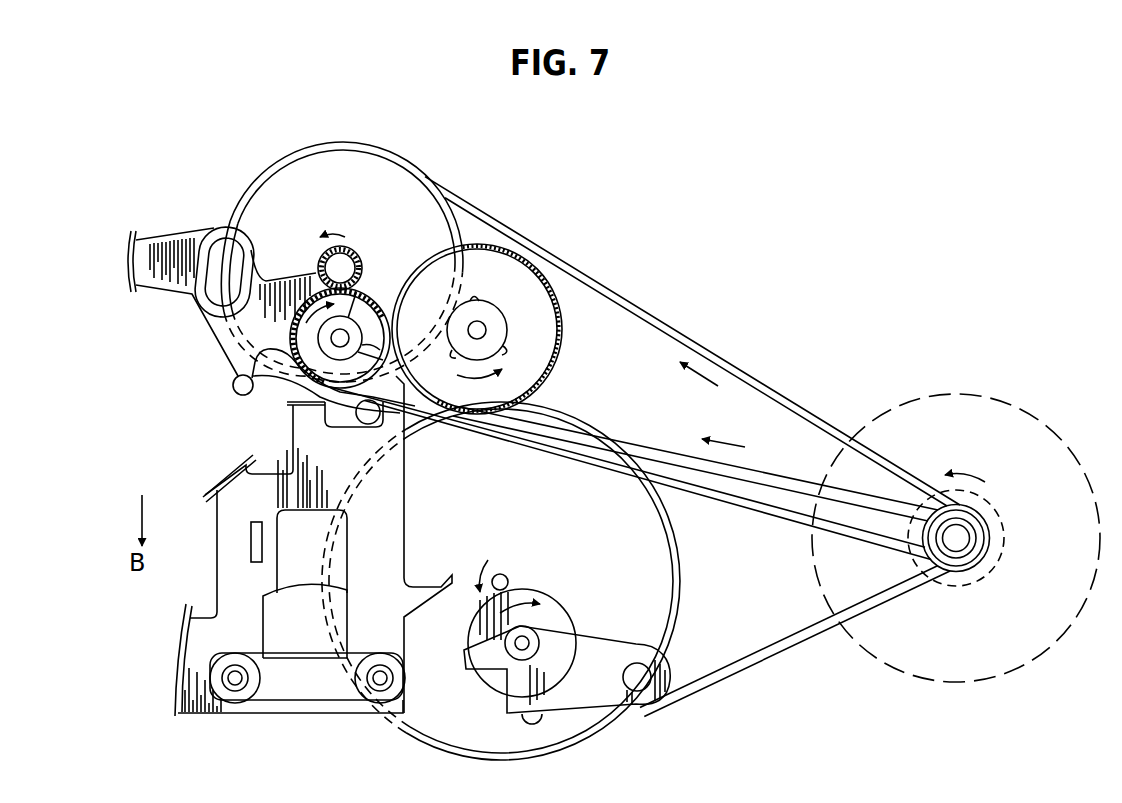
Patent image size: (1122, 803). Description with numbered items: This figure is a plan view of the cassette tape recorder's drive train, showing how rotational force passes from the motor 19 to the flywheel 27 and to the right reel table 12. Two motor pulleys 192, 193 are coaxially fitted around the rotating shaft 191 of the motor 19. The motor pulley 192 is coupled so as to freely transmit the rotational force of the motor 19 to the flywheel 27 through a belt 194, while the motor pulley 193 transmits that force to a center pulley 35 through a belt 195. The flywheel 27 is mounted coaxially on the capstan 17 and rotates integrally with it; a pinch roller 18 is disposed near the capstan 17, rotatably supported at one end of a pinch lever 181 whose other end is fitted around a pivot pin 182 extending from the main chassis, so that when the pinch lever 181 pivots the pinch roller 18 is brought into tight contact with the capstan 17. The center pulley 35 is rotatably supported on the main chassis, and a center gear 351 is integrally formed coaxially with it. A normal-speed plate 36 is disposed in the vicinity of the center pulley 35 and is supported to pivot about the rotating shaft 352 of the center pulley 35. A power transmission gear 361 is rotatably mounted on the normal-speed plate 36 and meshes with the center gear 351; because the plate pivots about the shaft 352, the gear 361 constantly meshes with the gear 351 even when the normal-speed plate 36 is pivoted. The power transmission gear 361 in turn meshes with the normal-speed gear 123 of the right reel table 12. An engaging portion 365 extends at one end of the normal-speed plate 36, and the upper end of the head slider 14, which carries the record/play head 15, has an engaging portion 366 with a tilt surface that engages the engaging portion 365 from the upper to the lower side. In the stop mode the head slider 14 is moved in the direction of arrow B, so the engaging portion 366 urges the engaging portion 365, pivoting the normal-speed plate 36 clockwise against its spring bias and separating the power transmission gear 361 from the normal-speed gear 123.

The center pulley 35 is at (357, 168).
The center gear 351 is at (380, 238).
The rotating shaft of the center pulley 352 is at (320, 257).
The power transmission gear 361 is at (382, 302).
The engaging portion 365 is at (357, 405).
The engaging portion 366 is at (364, 410).
The normal-speed plate 36 is at (218, 346).
The right reel table 12 is at (495, 314).
The normal-speed gear 123 is at (556, 356).
The belt 195 is at (616, 300).
The belt 194 is at (757, 670).
The motor 19 is at (962, 395).
The rotating shaft 191 is at (962, 545).
The motor pulley 192 is at (1004, 538).
The motor pulley 193 is at (985, 530).
The flywheel 27 is at (681, 580).
The head slider 14 is at (407, 505).
The record/play head 15 is at (262, 628).
The capstan 17 is at (503, 575).
The pinch roller 18 is at (545, 597).
The pinch lever 181 is at (595, 634).
The pivot pin 182 is at (637, 663).